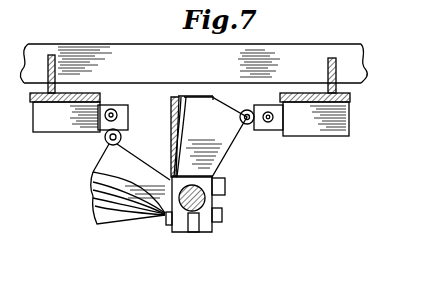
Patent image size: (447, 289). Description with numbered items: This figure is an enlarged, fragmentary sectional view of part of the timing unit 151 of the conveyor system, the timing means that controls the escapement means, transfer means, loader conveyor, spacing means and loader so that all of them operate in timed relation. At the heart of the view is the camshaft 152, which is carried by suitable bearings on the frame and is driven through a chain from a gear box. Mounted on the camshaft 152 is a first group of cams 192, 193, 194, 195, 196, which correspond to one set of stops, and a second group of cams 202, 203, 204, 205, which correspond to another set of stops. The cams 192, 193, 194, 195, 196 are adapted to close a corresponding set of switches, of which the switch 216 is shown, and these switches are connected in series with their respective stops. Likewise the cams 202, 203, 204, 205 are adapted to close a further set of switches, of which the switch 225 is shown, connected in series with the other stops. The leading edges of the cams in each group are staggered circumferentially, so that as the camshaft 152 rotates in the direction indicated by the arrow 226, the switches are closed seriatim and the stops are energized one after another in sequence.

The timing unit 151 is at (263, 196).
The camshaft 152 is at (200, 213).
The cam 192 is at (120, 219).
The cam 193 is at (101, 216).
The cam 194 is at (93, 205).
The cam 195 is at (93, 194).
The cam 196 is at (95, 170).
The cam 202 is at (179, 117).
The cam 203 is at (171, 109).
The cam 204 is at (179, 96).
The cam 205 is at (226, 105).
The switch 216 is at (52, 132).
The switch 225 is at (322, 136).
The arrow 226 is at (137, 186).